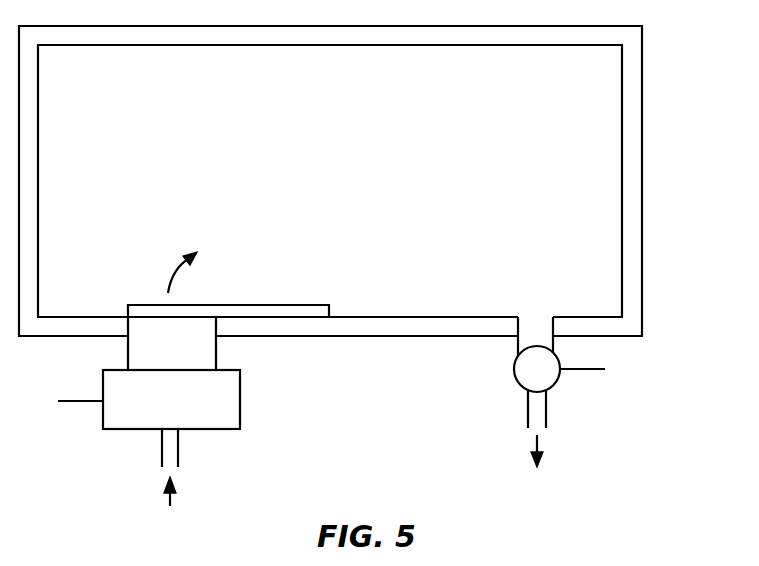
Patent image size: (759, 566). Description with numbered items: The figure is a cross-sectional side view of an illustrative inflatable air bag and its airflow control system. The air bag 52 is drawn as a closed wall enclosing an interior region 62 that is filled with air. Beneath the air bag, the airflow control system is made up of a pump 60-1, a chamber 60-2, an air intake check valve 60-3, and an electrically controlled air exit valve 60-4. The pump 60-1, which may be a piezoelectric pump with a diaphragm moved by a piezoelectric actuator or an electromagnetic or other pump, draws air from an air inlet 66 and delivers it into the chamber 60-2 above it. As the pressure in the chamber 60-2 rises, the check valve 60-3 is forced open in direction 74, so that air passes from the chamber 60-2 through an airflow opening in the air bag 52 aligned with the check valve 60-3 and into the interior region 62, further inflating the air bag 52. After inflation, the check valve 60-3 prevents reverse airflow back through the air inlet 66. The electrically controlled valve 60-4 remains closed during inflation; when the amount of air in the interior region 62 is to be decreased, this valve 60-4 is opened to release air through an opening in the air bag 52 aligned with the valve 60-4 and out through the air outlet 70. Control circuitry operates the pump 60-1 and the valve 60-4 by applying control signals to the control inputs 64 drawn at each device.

The air bag 52 is at (632, 182).
The interior region 62 is at (612, 72).
The pump 60-1 is at (240, 402).
The chamber 60-2 is at (212, 352).
The air intake check valve 60-3 is at (309, 312).
The electrically controlled air exit valve 60-4 is at (514, 367).
The control inputs 64 is at (80, 403).
The air inlet 66 is at (178, 448).
The air outlet 70 is at (527, 408).
The direction 74 is at (172, 270).